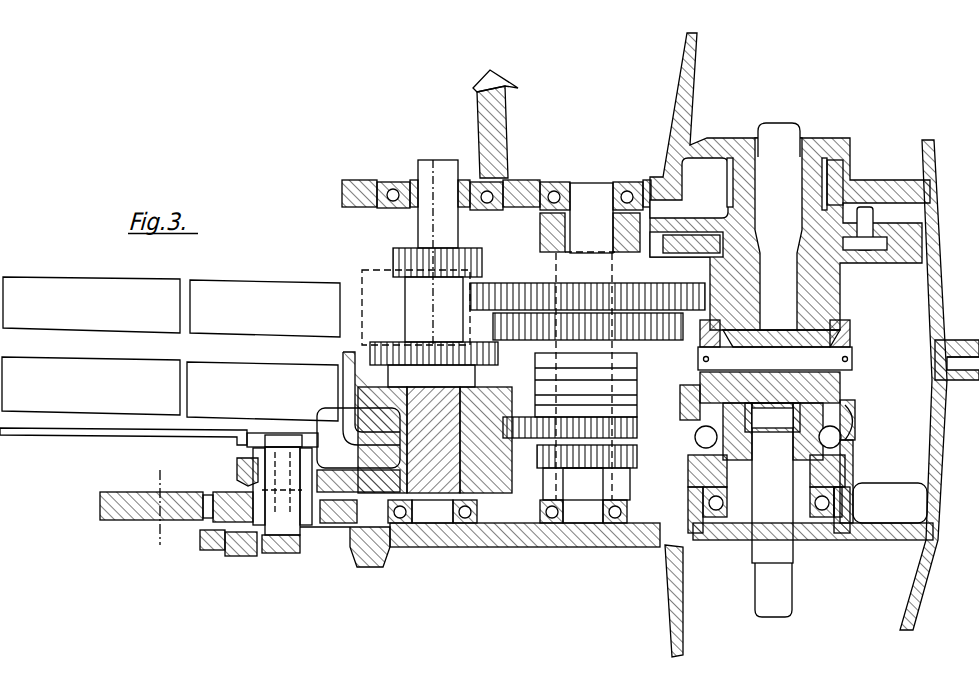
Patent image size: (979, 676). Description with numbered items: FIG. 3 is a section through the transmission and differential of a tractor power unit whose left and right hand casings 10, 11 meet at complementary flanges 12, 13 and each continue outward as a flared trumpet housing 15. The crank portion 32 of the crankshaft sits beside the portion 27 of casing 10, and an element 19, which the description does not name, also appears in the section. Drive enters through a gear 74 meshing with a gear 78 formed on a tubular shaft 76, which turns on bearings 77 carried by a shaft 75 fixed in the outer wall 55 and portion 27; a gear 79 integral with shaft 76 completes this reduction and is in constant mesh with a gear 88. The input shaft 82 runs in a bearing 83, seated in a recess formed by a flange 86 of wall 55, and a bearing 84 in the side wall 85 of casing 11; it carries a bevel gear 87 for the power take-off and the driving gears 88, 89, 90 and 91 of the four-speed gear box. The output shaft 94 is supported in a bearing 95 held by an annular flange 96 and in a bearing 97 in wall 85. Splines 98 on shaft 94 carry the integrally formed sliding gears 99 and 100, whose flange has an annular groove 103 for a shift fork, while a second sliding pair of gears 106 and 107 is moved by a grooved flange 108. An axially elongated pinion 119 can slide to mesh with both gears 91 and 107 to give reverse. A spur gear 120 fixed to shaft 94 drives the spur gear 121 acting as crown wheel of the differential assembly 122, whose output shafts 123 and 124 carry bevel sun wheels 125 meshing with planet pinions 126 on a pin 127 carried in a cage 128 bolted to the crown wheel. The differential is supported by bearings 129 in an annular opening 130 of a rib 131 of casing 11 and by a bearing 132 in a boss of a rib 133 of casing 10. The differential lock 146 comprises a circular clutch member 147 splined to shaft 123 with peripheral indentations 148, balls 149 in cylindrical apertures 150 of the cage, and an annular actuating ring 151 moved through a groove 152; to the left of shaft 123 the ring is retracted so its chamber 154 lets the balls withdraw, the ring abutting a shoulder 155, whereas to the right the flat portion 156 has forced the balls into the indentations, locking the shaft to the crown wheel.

The left hand casing 10 is at (407, 549).
The right hand casing 11 is at (346, 177).
The flange 12 is at (968, 383).
The flange 13 is at (957, 340).
The trumpet housing 15 is at (670, 603).
The boss 19 is at (318, 479).
The portion of casing 10 27 is at (237, 434).
The crank portion 32 is at (250, 315).
The outer wall 55 is at (325, 535).
The gear 74 is at (140, 525).
The shaft 75 is at (262, 540).
The tubular shaft 76 is at (238, 538).
The bearings 77 is at (247, 478).
The gear 78 is at (208, 518).
The gear 79 is at (358, 438).
The input shaft 82 is at (444, 313).
The bearing 83 is at (466, 536).
The bearing 84 is at (498, 185).
The side wall 85 is at (548, 185).
The flange 86 is at (482, 524).
The bevel gear 87 is at (397, 170).
The gear 88 is at (483, 478).
The gear 89 is at (495, 402).
The gear 90 is at (498, 354).
The gear 91 is at (393, 256).
The output shaft 94 is at (600, 190).
The bearing 95 is at (612, 524).
The annular flange 96 is at (636, 528).
The bearing 97 is at (620, 185).
The splines 98 is at (590, 495).
The gear 99 is at (632, 472).
The gear 100 is at (637, 452).
The annular groove 103 is at (637, 420).
The gear 106 is at (660, 341).
The gear 107 is at (657, 294).
The grooved flange 108 is at (600, 391).
The pinion 119 is at (368, 275).
The spur gear 120 is at (540, 222).
The spur gear 121 is at (905, 252).
The differential assembly 122 is at (852, 336).
The output shaft 123 is at (775, 584).
The output shaft 124 is at (771, 130).
The bevel sun wheel 125 is at (842, 322).
The differential planet pinions 126 is at (874, 388).
The pin 127 is at (852, 360).
The cage 128 is at (840, 300).
The bearings 129 is at (850, 170).
The annular opening 130 is at (824, 158).
The rib 131 is at (870, 182).
The bearing 132 is at (825, 525).
The rib 133 is at (862, 528).
The differential lock 146 is at (856, 492).
The circular clutch member 147 is at (856, 420).
The indentations 148 is at (805, 440).
The balls 149 is at (713, 532).
The cylindrical apertures 150 is at (818, 462).
The annular actuating ring 151 is at (702, 448).
The groove 152 is at (856, 455).
The chamber 154 is at (792, 503).
The shoulder 155 is at (700, 352).
The flat portion 156 is at (856, 436).